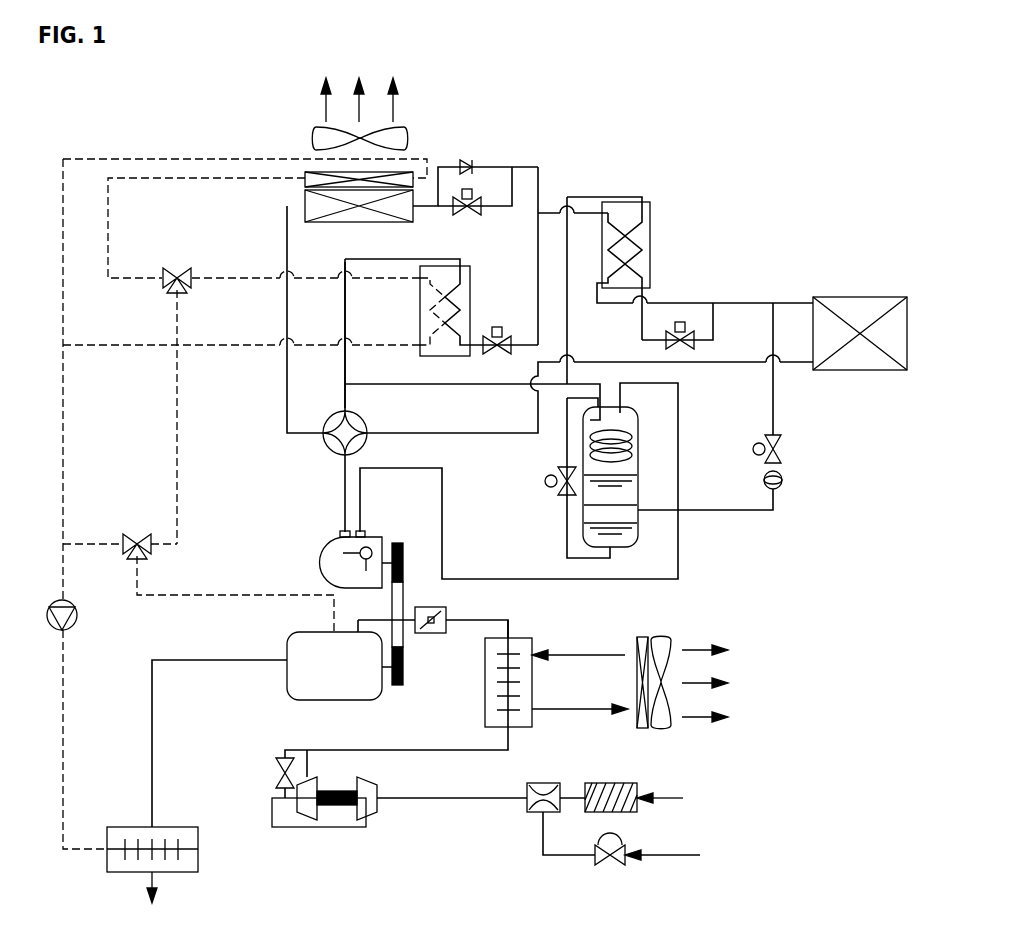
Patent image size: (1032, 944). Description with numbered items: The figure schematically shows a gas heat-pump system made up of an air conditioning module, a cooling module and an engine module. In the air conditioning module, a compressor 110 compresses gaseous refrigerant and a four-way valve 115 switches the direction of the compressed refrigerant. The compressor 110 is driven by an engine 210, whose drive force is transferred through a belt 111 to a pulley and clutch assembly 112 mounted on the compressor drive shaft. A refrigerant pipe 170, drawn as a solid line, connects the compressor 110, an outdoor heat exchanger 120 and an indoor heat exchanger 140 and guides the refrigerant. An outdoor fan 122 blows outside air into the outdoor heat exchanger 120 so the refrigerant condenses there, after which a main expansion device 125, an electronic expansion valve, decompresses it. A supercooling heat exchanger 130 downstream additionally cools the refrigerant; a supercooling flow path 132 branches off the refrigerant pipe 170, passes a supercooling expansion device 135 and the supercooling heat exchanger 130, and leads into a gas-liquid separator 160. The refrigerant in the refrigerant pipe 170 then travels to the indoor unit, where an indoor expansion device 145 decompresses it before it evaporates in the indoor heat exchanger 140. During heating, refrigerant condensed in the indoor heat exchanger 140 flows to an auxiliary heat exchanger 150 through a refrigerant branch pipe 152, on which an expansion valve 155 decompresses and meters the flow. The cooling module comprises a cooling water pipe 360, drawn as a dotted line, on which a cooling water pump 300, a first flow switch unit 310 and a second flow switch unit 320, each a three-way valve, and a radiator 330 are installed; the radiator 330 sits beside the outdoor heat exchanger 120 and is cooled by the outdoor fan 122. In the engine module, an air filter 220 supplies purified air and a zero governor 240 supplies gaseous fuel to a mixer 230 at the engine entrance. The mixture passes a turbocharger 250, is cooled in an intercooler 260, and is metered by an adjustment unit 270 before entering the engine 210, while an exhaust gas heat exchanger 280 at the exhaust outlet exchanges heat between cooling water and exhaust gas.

The compressor 110 is at (385, 540).
The belt 111 is at (403, 612).
The pulley and clutch assembly 112 is at (405, 560).
The four-way valve 115 is at (367, 425).
The outdoor heat exchanger 120 is at (305, 195).
The outdoor fan 122 is at (319, 128).
The main expansion device 125 is at (458, 203).
The supercooling heat exchanger 130 is at (650, 210).
The supercooling flow path 132 is at (642, 320).
The supercooling expansion device 135 is at (690, 335).
The indoor heat exchanger 140 is at (860, 297).
The indoor expansion device 145 is at (795, 452).
The auxiliary heat exchanger 150 is at (420, 308).
The refrigerant branch pipe 152 is at (345, 366).
The expansion valve 155 is at (497, 327).
The gas-liquid separator 160 is at (640, 460).
The refrigerant pipe 170 is at (536, 176).
The engine 210 is at (288, 690).
The air filter 220 is at (610, 783).
The mixer 230 is at (537, 815).
The zero governor 240 is at (612, 862).
The turbocharger 250 is at (370, 828).
The intercooler 260 is at (485, 715).
The adjustment unit 270 is at (447, 615).
The exhaust gas heat exchanger 280 is at (198, 858).
The cooling water pump 300 is at (78, 625).
The first flow switch unit 310 is at (150, 555).
The second flow switch unit 320 is at (177, 268).
The radiator 330 is at (302, 177).
The cooling water pipe 360 is at (63, 420).